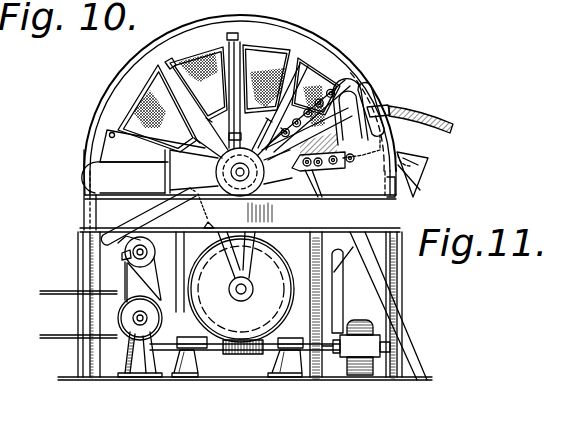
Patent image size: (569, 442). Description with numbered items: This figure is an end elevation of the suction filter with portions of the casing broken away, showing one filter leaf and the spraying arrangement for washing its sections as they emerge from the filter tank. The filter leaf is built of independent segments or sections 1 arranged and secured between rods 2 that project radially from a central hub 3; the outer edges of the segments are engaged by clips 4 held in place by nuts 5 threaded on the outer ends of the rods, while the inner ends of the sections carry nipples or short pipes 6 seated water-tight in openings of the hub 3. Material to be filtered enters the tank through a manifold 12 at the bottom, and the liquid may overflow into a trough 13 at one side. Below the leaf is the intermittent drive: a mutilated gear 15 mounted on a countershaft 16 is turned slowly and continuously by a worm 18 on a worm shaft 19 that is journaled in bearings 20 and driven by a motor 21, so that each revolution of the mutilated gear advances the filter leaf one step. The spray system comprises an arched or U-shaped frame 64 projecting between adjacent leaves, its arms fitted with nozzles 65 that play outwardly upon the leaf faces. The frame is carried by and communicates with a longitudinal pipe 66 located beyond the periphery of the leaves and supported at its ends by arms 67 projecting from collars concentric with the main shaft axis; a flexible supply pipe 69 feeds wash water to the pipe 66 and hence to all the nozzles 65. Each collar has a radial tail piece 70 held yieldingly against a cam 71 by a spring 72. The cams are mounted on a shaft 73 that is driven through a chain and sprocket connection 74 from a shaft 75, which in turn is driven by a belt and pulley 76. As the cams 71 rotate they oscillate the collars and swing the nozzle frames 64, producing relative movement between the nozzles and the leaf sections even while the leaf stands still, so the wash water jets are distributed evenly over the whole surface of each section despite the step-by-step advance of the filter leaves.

The filter leaf segment 1 is at (230, 82).
The rod 2 is at (188, 58).
The hub 3 is at (159, 197).
The clip 4 is at (312, 72).
The nut 5 is at (322, 62).
The nipple 6 is at (190, 133).
The manifold 12 is at (192, 289).
The trough 13 is at (414, 163).
The mutilated gear 15 is at (303, 301).
The countershaft 16 is at (246, 278).
The worm 18 is at (248, 350).
The worm shaft 19 is at (240, 352).
The bearing 20 is at (232, 376).
The motor 21 is at (377, 336).
The nozzle frame 64 is at (360, 96).
The nozzle 65 is at (296, 92).
The longitudinal pipe 66 is at (378, 106).
The arm 67 is at (328, 152).
The flexible supply pipe 69 is at (436, 120).
The tail piece 70 is at (147, 212).
The cam 71 is at (118, 253).
The spring 72 is at (231, 208).
The cam shaft 73 is at (122, 257).
The chain and sprocket connection 74 is at (308, 212).
The shaft 75 is at (127, 325).
The belt and pulley 76 is at (118, 317).